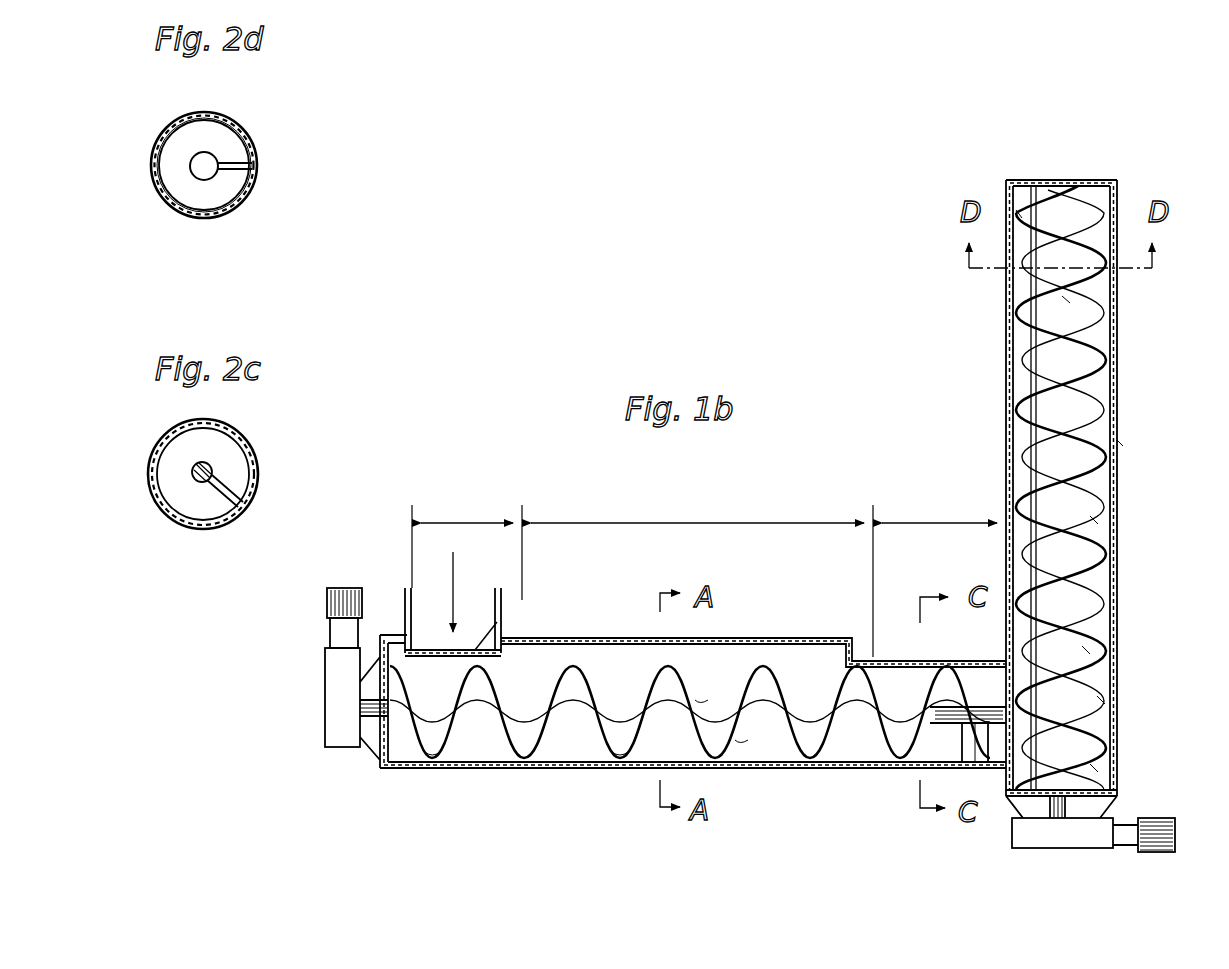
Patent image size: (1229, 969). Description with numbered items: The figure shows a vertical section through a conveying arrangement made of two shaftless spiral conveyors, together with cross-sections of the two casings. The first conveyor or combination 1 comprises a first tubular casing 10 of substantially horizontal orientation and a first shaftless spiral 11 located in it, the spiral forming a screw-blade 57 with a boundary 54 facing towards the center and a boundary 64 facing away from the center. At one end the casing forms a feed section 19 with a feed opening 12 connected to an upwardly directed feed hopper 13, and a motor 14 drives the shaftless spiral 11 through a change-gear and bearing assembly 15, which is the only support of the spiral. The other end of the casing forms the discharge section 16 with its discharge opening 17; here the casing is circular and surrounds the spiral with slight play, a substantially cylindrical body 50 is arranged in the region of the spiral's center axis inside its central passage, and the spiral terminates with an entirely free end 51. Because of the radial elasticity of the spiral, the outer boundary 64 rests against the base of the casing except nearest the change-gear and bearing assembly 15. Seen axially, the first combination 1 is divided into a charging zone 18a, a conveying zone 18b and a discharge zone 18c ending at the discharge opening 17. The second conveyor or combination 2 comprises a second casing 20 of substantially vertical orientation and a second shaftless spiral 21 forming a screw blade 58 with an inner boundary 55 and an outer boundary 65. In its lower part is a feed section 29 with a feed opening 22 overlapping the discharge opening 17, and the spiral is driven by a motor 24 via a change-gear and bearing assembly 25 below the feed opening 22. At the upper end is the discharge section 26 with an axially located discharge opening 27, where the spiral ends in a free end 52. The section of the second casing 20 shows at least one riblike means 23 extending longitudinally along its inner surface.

In FIG. 1B, the first conveyor 1 is at (748, 628).
In FIG. 1B, the second conveyor 2 is at (1132, 438).
In FIG. 2C, the first tubular casing 10 is at (241, 433).
In FIG. 1B, the first tubular casing 10 is at (600, 638).
In FIG. 2C, the first shaftless spiral 11 is at (228, 468).
In FIG. 1B, the first shaftless spiral 11 is at (808, 740).
In FIG. 1B, the feed opening 12 is at (497, 632).
In FIG. 1B, the feed hopper 13 is at (425, 605).
In FIG. 1B, the motor 14 is at (327, 603).
In FIG. 1B, the change-gear and bearing assembly 15 is at (345, 697).
In FIG. 1B, the discharge section 16 is at (980, 690).
In FIG. 1B, the discharge opening 17 is at (1100, 700).
In FIG. 1B, the charging zone 18a is at (467, 547).
In FIG. 1B, the conveying zone 18b is at (702, 574).
In FIG. 1B, the discharge zone 18c is at (939, 507).
In FIG. 1B, the feed section 19 is at (470, 750).
In FIG. 2D, the second casing 20 is at (232, 207).
In FIG. 1B, the second casing 20 is at (1117, 545).
In FIG. 2D, the second shaftless spiral 21 is at (256, 169).
In FIG. 1B, the second shaftless spiral 21 is at (1084, 372).
In FIG. 1B, the feed opening 22 is at (997, 682).
In FIG. 2D, the riblike means 23 is at (170, 133).
In FIG. 1B, the riblike means 23 is at (1033, 357).
In FIG. 1B, the motor 24 is at (1155, 835).
In FIG. 1B, the change-gear and bearing assembly 25 is at (1075, 836).
In FIG. 1B, the discharge section 26 is at (1015, 211).
In FIG. 1B, the discharge opening 27 is at (1068, 185).
In FIG. 1B, the feed section 29 is at (1095, 768).
In FIG. 1B, the cylindrical body 50 is at (972, 727).
In FIG. 1B, the free end of spiral 51 is at (992, 745).
In FIG. 1B, the free end of spiral 52 is at (1086, 186).
In FIG. 1B, the inner boundary 54 is at (700, 700).
In FIG. 1B, the inner boundary 55 is at (1068, 300).
In FIG. 1B, the screw-blade 57 is at (625, 745).
In FIG. 1B, the screw blade 58 is at (1085, 650).
In FIG. 1B, the outer boundary 64 is at (742, 742).
In FIG. 1B, the outer boundary 65 is at (1095, 520).